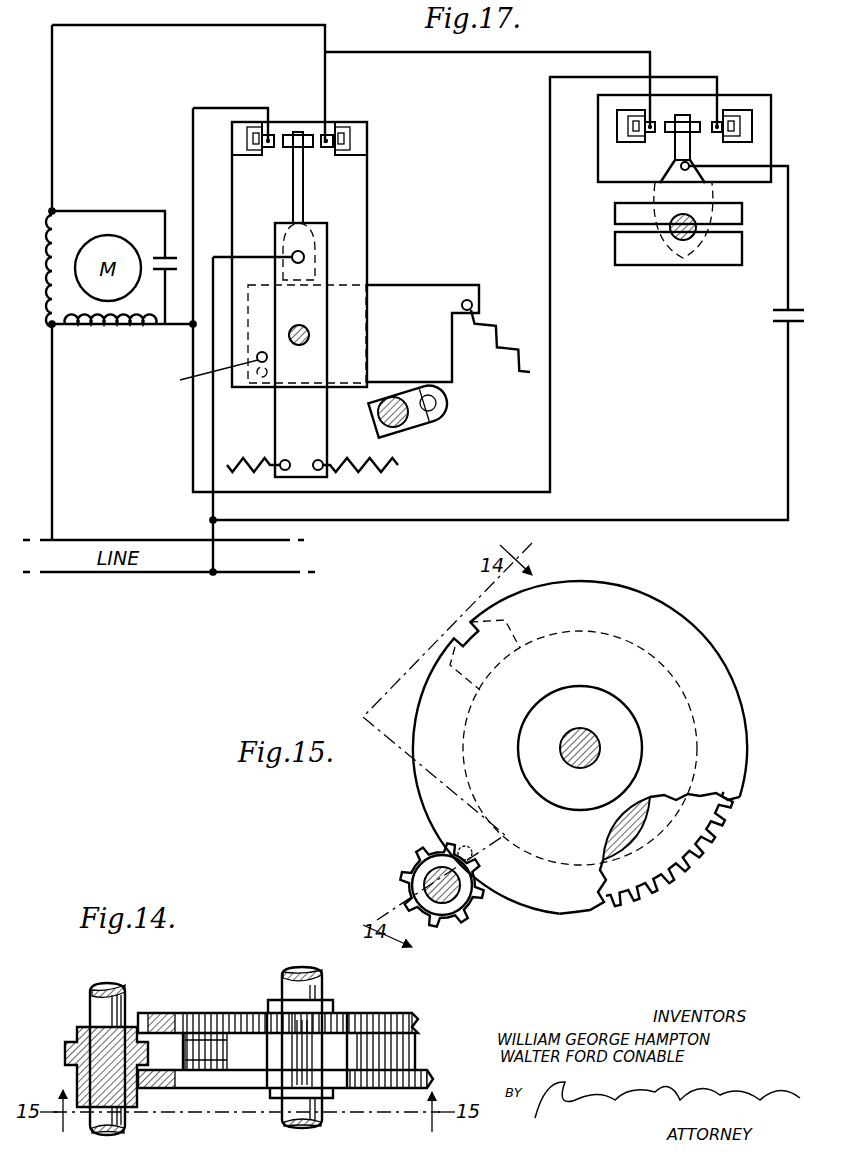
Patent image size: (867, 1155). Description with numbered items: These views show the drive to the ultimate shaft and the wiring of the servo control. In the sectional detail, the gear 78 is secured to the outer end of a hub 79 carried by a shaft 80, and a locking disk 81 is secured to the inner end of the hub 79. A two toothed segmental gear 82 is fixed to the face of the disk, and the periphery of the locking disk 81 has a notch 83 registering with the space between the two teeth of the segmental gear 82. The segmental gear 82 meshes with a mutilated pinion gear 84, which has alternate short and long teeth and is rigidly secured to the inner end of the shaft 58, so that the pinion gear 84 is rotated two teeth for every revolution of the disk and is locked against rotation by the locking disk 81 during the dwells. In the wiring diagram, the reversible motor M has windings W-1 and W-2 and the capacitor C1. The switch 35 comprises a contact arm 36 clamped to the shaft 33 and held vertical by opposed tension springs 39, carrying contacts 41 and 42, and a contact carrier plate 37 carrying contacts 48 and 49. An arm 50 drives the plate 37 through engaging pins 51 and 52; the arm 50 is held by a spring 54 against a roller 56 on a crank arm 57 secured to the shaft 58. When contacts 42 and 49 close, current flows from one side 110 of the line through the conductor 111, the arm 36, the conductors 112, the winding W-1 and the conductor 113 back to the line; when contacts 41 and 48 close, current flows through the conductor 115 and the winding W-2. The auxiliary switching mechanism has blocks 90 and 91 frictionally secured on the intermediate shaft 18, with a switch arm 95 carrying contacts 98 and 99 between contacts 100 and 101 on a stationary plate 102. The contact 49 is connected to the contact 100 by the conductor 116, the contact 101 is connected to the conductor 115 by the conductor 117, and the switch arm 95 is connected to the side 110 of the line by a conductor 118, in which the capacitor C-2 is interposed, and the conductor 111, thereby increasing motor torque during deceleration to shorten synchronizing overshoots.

In FIG. 17, the conductor 112 is at (174, 26).
In FIG. 17, the conductor 116 is at (545, 52).
In FIG. 17, the conductor 113 is at (52, 405).
In FIG. 17, the winding W-1 is at (36, 277).
In FIG. 17, the winding W-2 is at (122, 327).
In FIG. 17, the capacitor C1 is at (174, 262).
In FIG. 17, the conductor 115 is at (193, 140).
In FIG. 17, the conductor 117 is at (193, 416).
In FIG. 17, the conductor 111 is at (213, 452).
In FIG. 17, the conductor 118 is at (666, 520).
In FIG. 17, the capacitor C-2 is at (766, 333).
In FIG. 17, the side of the line 110 is at (157, 572).
In FIG. 17, the switch 35 is at (380, 222).
In FIG. 17, the contact 41 is at (285, 132).
In FIG. 17, the contact 42 is at (302, 128).
In FIG. 17, the contact 48 is at (270, 148).
In FIG. 17, the contact 49 is at (327, 148).
In FIG. 17, the contact carrier plate 37 is at (330, 260).
In FIG. 17, the contact arm 36 is at (312, 318).
In FIG. 17, the shaft 33 is at (309, 340).
In FIG. 17, the pin 51 is at (268, 372).
In FIG. 17, the pin 52 is at (200, 374).
In FIG. 17, the tension springs 39 is at (241, 459).
In FIG. 17, the arm 50 is at (434, 287).
In FIG. 17, the spring 54 is at (518, 334).
In FIG. 17, the roller 56 is at (452, 403).
In FIG. 17, the crank arm 57 is at (430, 415).
In FIG. 17, the shaft 58 is at (398, 420).
In FIG. 15, the shaft 58 is at (450, 902).
In FIG. 14, the shaft 58 is at (92, 1005).
In FIG. 17, the stationary plate 102 is at (766, 100).
In FIG. 17, the contact 98 is at (676, 112).
In FIG. 17, the contact 99 is at (700, 118).
In FIG. 17, the contact 100 is at (656, 135).
In FIG. 17, the contact 101 is at (715, 135).
In FIG. 17, the switch arm 95 is at (660, 191).
In FIG. 17, the block 90 is at (621, 212).
In FIG. 17, the block 91 is at (636, 262).
In FIG. 17, the intermediate shaft 18 is at (683, 240).
In FIG. 15, the gear 78 is at (700, 858).
In FIG. 14, the gear 78 is at (235, 1020).
In FIG. 15, the hub 79 is at (642, 745).
In FIG. 14, the hub 79 is at (413, 1057).
In FIG. 15, the shaft 80 is at (583, 730).
In FIG. 14, the shaft 80 is at (322, 987).
In FIG. 15, the locking disk 81 is at (582, 905).
In FIG. 14, the locking disk 81 is at (218, 1087).
In FIG. 15, the segmental gear 82 is at (528, 622).
In FIG. 14, the segmental gear 82 is at (317, 1052).
In FIG. 15, the notch 83 is at (462, 630).
In FIG. 14, the notch 83 is at (305, 1092).
In FIG. 15, the pinion gear 84 is at (428, 858).
In FIG. 14, the pinion gear 84 is at (62, 1053).